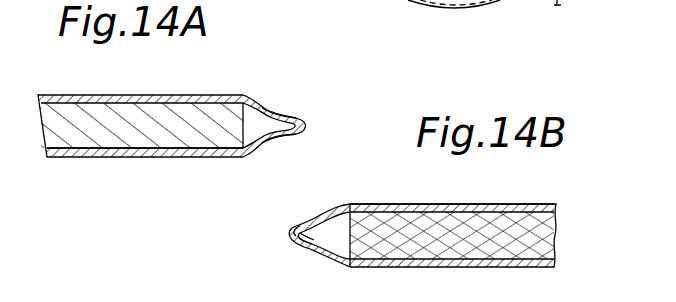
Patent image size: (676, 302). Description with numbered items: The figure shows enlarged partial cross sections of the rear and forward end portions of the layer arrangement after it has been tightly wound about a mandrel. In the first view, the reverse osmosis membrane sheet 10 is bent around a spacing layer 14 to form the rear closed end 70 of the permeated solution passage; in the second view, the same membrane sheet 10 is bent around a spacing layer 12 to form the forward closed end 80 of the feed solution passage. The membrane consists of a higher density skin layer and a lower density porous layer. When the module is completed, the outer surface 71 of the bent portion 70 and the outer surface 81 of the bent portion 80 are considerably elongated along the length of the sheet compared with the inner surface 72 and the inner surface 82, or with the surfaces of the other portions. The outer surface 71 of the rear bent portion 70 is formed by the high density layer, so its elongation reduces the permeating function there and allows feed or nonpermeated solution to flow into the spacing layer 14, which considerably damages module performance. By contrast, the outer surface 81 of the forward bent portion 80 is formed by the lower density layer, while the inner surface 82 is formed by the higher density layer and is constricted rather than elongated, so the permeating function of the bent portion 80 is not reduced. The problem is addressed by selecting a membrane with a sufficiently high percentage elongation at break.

In FIG. 14A, the reverse osmosis membrane sheet 10 is at (185, 158).
In FIG. 14B, the reverse osmosis membrane sheet 10 is at (478, 204).
In FIG. 14B, the spacing layer 12 is at (442, 243).
In FIG. 14A, the spacing layer 14 is at (147, 110).
In FIG. 14A, the rear closed end 70 is at (351, 121).
In FIG. 14A, the outer surface 71 is at (301, 132).
In FIG. 14A, the inner surface 72 is at (290, 122).
In FIG. 14B, the forward closed end 80 is at (291, 236).
In FIG. 14B, the outer surface 81 is at (293, 228).
In FIG. 14B, the inner surface 82 is at (304, 246).